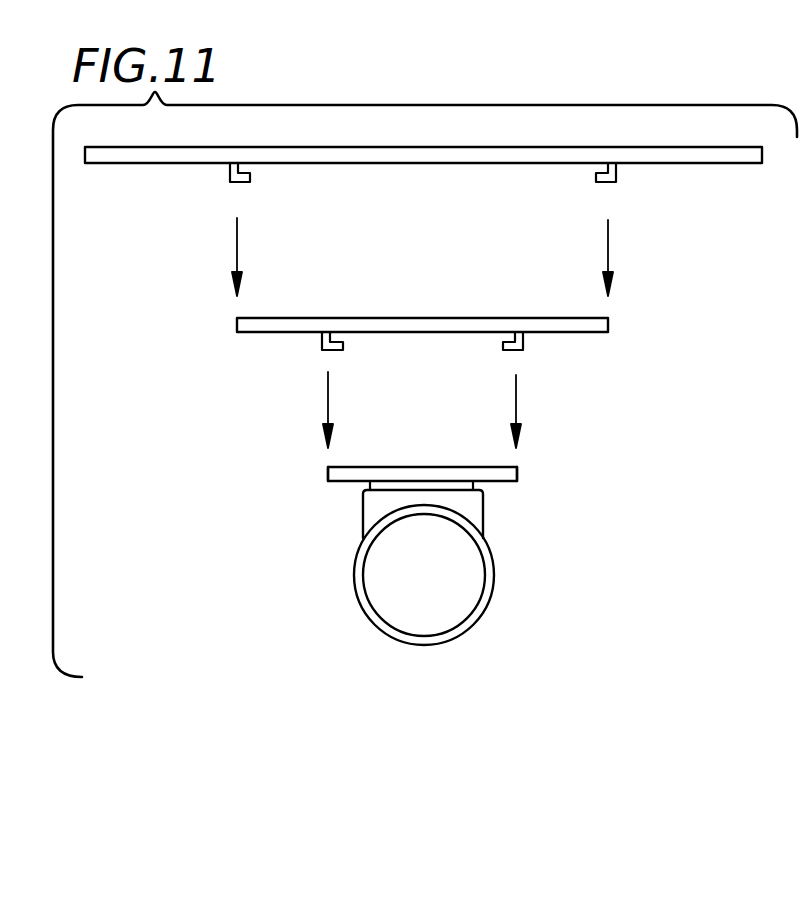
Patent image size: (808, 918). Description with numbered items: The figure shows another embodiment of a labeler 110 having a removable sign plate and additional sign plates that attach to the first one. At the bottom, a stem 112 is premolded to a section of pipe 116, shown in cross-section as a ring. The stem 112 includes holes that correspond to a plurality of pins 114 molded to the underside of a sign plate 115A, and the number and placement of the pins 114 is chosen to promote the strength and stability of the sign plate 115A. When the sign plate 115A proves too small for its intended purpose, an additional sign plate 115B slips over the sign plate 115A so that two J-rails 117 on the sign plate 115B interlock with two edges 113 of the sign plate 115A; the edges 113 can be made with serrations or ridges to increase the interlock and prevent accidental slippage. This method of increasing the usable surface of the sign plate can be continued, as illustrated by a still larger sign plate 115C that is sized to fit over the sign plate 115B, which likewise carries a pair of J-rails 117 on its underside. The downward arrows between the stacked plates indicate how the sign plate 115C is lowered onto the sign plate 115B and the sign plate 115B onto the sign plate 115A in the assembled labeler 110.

The labeler 110 is at (309, 517).
The stem 112 is at (472, 510).
The edges 113 is at (327, 474).
The pins 114 is at (473, 487).
The sign plate 115A is at (475, 467).
The additional sign plate 115B is at (609, 325).
The sign plate 115C is at (720, 164).
The section of pipe 116 is at (490, 601).
The J-rails 117 is at (318, 342).